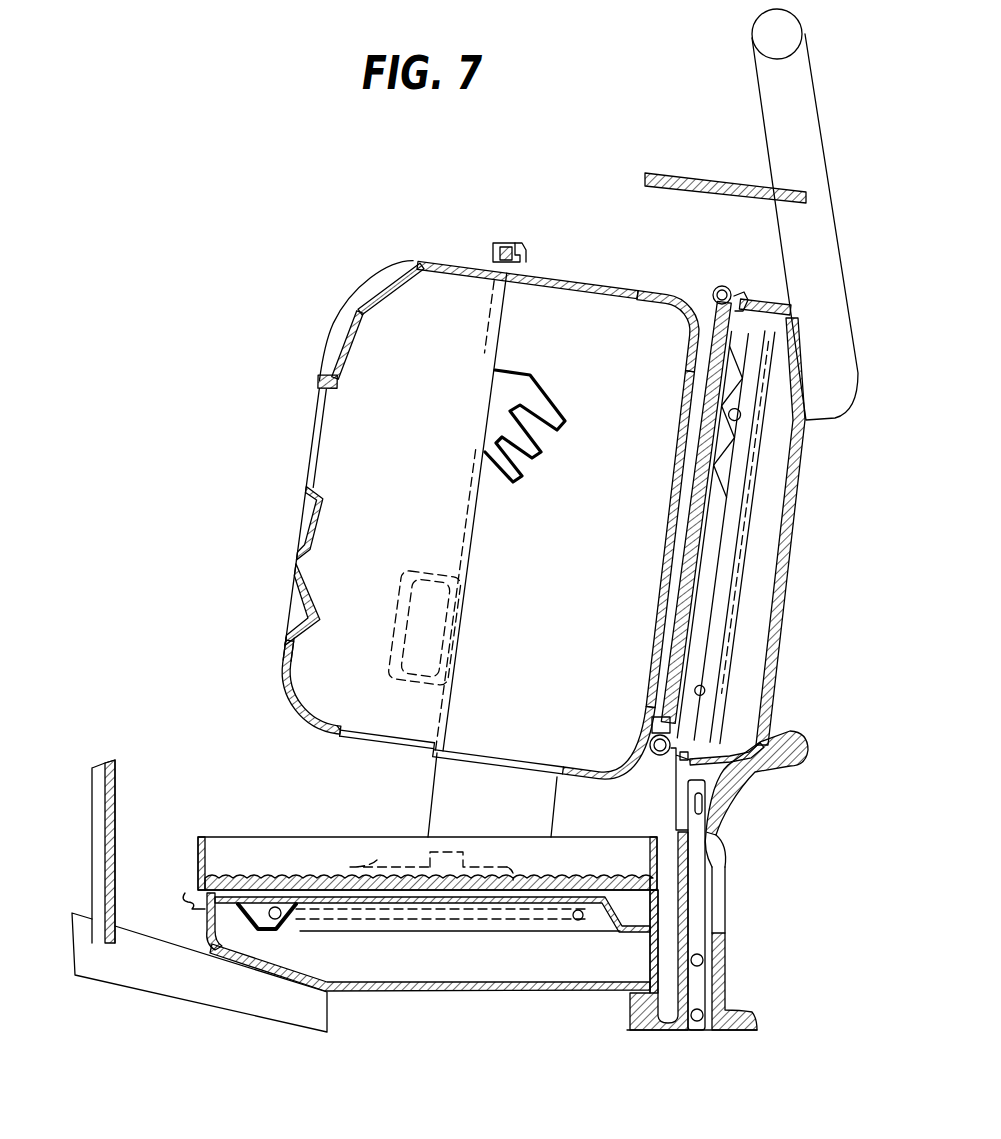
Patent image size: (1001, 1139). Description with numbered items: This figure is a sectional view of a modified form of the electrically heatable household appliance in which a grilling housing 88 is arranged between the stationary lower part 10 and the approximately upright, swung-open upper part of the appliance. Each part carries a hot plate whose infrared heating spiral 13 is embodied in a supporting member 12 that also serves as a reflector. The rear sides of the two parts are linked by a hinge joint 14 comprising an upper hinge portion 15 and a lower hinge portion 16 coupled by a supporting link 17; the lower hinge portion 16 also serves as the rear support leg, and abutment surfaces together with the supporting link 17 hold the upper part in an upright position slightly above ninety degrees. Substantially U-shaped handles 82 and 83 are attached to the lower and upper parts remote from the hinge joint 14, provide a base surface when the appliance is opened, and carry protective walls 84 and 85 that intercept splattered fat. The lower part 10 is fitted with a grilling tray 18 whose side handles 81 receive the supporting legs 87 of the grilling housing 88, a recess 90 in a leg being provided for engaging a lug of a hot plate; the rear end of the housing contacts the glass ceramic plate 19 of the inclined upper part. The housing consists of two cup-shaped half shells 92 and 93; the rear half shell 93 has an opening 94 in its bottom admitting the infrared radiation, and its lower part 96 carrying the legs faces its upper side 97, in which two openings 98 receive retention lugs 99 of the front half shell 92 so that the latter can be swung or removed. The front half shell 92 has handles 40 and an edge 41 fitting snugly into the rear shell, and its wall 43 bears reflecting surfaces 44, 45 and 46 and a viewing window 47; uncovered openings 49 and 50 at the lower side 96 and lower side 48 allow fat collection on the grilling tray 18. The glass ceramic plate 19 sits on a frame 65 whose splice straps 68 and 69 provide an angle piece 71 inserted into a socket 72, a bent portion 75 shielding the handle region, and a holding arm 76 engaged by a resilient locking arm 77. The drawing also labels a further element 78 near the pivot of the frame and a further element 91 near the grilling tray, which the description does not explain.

The lower part 10 is at (453, 988).
The supporting member 12 is at (415, 915).
The infrared heating spiral 13 is at (458, 935).
The hinge joint 14 is at (736, 840).
The upper hinge portion 15 is at (740, 798).
The lower hinge portion 16 is at (722, 968).
The supporting link 17 is at (700, 914).
The grilling tray 18 is at (262, 835).
The glass ceramic plate 19 is at (695, 498).
The handles 40 is at (424, 580).
The edge 41 is at (505, 305).
The wall 43 is at (282, 657).
The reflecting surface 44 is at (316, 605).
The reflecting surface 45 is at (355, 352).
The reflecting surface 46 is at (392, 297).
The viewing window 47 is at (312, 432).
The lower side 48 is at (328, 735).
The opening 49 is at (515, 760).
The opening 50 is at (384, 730).
The frame 65 is at (652, 754).
The splice strap 68 is at (677, 738).
The splice strap 69 is at (755, 312).
The angle piece 71 is at (679, 764).
The socket 72 is at (690, 757).
The bent portion 75 is at (708, 356).
The holding arm 76 is at (730, 290).
The resilient locking arm 77 is at (750, 297).
The pivot pin 78 is at (718, 286).
The handle 81 is at (376, 858).
The handle 82 is at (205, 998).
The handle 83 is at (807, 104).
The protective wall 84 is at (92, 847).
The protective wall 85 is at (694, 150).
The supporting leg 87 is at (513, 810).
The grilling housing 88 is at (372, 275).
The recess 90 is at (448, 850).
The projection 91 is at (553, 857).
The half shell 92 is at (290, 697).
The half shell 93 is at (590, 278).
The opening 94 is at (688, 393).
The lower part 96 is at (586, 770).
The upper side 97 is at (638, 285).
The opening 98 is at (518, 243).
The retention lug 99 is at (493, 243).